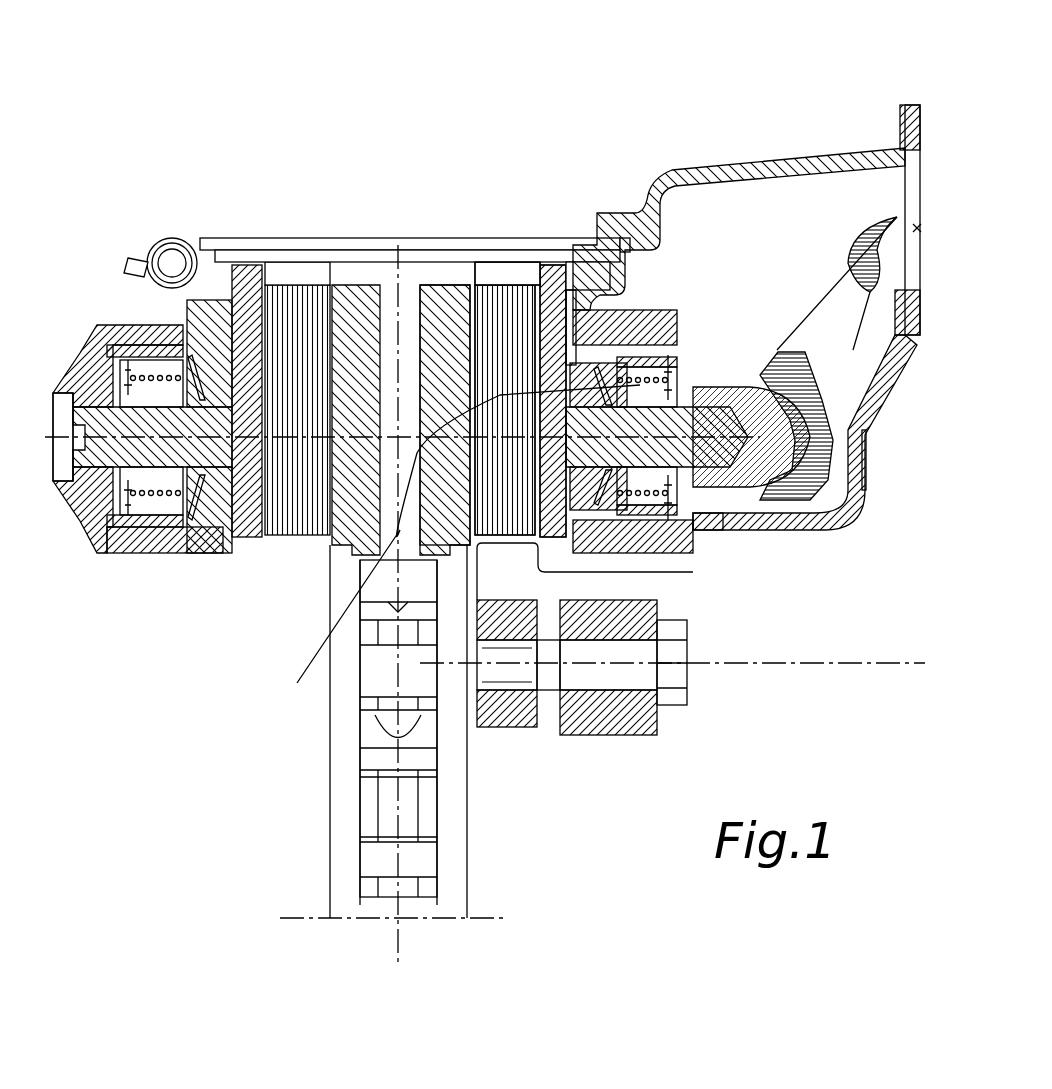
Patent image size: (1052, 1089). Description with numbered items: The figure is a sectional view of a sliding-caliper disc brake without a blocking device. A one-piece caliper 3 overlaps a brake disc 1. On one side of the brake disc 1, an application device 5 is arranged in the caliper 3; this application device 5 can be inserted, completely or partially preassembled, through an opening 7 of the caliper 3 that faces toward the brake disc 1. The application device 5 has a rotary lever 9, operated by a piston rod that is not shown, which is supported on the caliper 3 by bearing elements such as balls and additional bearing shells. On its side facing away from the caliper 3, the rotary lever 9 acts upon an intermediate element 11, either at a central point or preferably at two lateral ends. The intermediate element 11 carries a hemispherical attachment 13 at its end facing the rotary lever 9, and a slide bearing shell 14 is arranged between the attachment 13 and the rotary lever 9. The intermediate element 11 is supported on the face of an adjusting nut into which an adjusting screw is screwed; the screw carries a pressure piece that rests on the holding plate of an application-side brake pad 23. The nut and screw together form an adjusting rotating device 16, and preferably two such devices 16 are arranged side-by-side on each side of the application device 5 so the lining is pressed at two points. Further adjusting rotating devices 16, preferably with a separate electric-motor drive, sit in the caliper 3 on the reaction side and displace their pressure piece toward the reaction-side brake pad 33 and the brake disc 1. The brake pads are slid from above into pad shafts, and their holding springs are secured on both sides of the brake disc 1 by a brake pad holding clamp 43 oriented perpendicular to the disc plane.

The brake disc 1 is at (357, 282).
The caliper 3 is at (727, 157).
The application device 5 is at (740, 217).
The opening 7 is at (587, 290).
The rotary lever 9 is at (830, 303).
The intermediate element 11 is at (733, 497).
The hemispherical attachment 13 is at (790, 497).
The slide bearing shell 14 is at (853, 430).
The adjusting rotating device 16 is at (670, 540).
The application-side brake pad 23 is at (485, 290).
The brake pad 33 is at (280, 530).
The brake pad holding clamp 43 is at (383, 245).